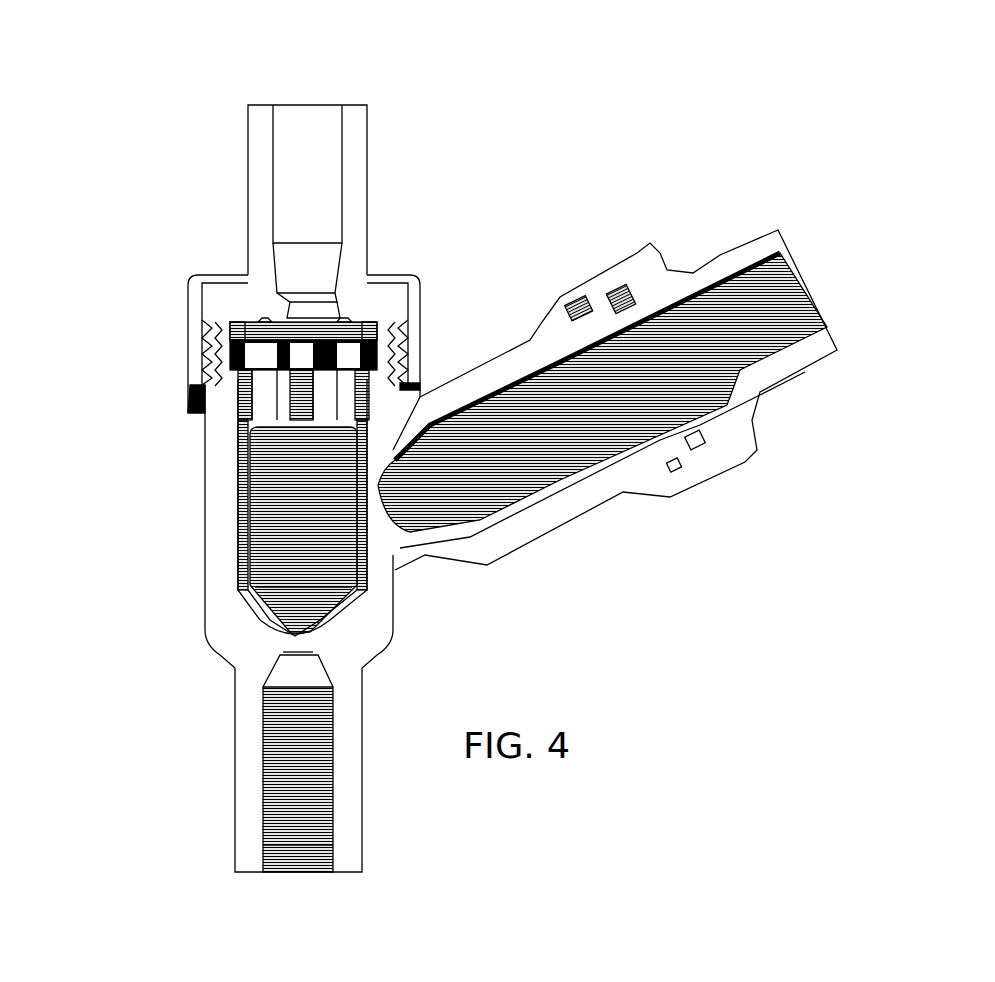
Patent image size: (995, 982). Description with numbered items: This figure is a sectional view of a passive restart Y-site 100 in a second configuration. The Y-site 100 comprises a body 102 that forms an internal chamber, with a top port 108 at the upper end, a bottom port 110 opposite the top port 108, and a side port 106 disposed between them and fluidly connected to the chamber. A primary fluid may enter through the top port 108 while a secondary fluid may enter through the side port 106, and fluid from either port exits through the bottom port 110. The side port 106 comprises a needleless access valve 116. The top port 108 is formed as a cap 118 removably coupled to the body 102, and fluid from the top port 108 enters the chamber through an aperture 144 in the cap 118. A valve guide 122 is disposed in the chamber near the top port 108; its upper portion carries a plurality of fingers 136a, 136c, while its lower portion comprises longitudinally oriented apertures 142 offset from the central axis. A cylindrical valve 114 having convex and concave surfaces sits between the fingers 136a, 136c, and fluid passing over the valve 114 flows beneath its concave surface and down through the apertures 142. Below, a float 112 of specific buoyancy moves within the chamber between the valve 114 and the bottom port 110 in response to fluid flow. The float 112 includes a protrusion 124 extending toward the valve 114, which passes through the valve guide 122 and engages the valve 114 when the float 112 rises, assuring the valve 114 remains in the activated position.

The passive restart Y-site 100 is at (601, 64).
The body 102 is at (210, 567).
The side port 106 is at (825, 268).
The top port 108 is at (310, 78).
The bottom port 110 is at (290, 890).
The float 112 is at (250, 517).
The valve 114 is at (250, 320).
The needleless access valve 116 is at (620, 263).
The cap 118 is at (367, 153).
The valve guide 122 is at (190, 282).
The protrusion 124 is at (237, 418).
The finger 136a is at (232, 322).
The finger 136c is at (367, 322).
The apertures 142 is at (383, 385).
The aperture 144 is at (290, 300).